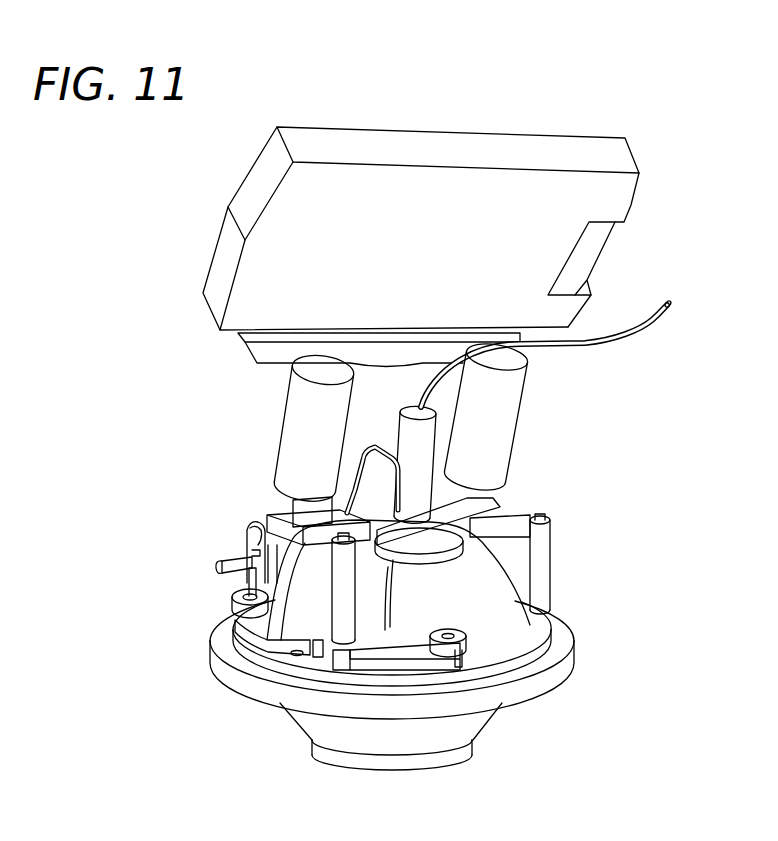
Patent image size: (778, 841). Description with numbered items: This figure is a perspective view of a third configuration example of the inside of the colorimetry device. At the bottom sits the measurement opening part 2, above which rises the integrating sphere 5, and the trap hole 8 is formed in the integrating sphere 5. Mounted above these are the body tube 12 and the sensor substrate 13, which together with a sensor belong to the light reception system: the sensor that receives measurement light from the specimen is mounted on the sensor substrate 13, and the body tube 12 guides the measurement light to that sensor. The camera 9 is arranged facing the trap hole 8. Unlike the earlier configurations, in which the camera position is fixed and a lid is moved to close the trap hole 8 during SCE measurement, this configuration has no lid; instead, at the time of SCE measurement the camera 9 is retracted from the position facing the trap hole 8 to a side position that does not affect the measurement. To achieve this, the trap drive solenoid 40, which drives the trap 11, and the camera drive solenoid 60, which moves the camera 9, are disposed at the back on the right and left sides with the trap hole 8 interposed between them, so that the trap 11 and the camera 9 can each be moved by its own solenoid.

The sensor substrate 13 is at (467, 150).
The body tube 12 is at (372, 418).
The camera drive solenoid 60 is at (303, 457).
The camera 9 is at (425, 448).
The trap drive solenoid 40 is at (500, 390).
The trap hole 8 is at (400, 560).
The trap 11 is at (430, 542).
The integrating sphere 5 is at (473, 605).
The measurement opening part 2 is at (425, 771).